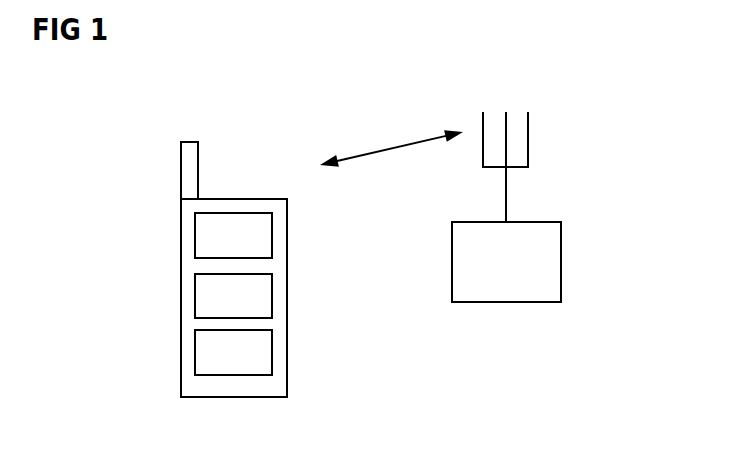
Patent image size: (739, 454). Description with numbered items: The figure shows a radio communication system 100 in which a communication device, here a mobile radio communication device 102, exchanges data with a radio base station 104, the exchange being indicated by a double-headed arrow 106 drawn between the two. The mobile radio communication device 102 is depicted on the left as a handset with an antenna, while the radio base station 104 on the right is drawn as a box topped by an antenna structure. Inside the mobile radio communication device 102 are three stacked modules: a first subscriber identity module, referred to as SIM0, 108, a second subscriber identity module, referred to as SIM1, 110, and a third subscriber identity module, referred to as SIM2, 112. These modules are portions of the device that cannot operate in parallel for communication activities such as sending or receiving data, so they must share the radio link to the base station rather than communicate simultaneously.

The radio communication system 100 is at (622, 108).
The mobile radio communication device 102 is at (212, 203).
The radio base station 104 is at (480, 278).
The arrow 106 is at (365, 157).
The first subscriber identity module 108 is at (200, 237).
The second subscriber identity module 110 is at (262, 305).
The third subscriber identity module 112 is at (200, 343).